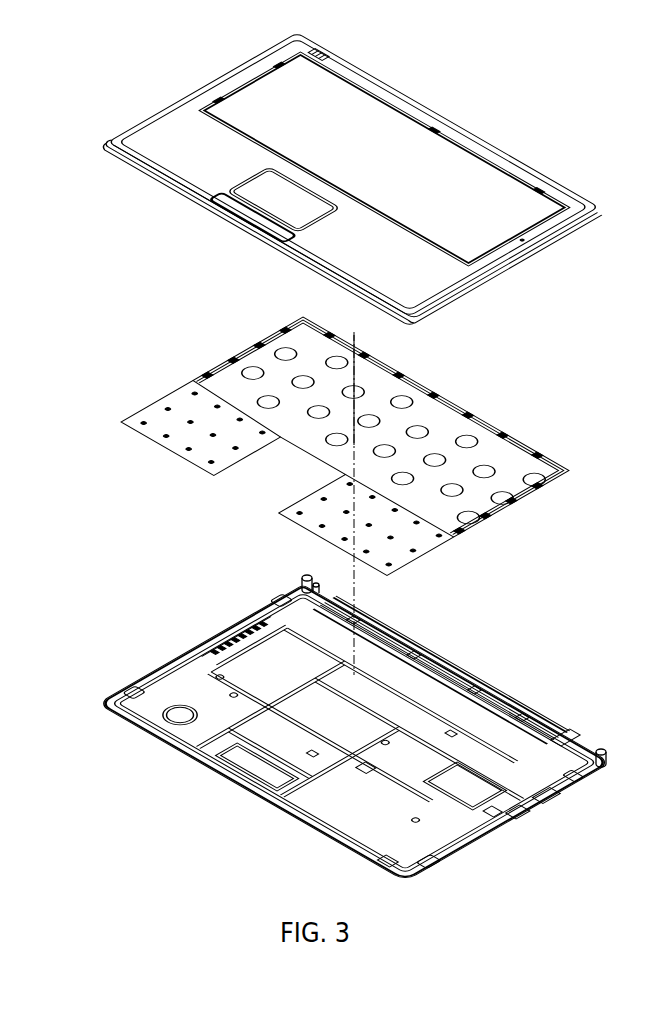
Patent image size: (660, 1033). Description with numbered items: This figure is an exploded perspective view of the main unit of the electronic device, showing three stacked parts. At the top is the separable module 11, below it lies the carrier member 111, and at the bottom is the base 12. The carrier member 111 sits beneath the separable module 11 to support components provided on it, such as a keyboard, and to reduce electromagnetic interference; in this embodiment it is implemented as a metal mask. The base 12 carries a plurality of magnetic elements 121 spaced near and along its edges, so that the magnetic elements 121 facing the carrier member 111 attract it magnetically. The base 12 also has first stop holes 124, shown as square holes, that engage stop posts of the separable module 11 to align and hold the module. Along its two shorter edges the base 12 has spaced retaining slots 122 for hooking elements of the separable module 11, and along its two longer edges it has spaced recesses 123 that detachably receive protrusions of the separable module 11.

The separable module 11 is at (425, 280).
The carrier member 111 is at (430, 540).
The base 12 is at (565, 658).
The magnetic elements 121 is at (278, 598).
The retaining slots 122 is at (518, 817).
The recesses 123 is at (544, 718).
The first stop holes 124 is at (367, 766).